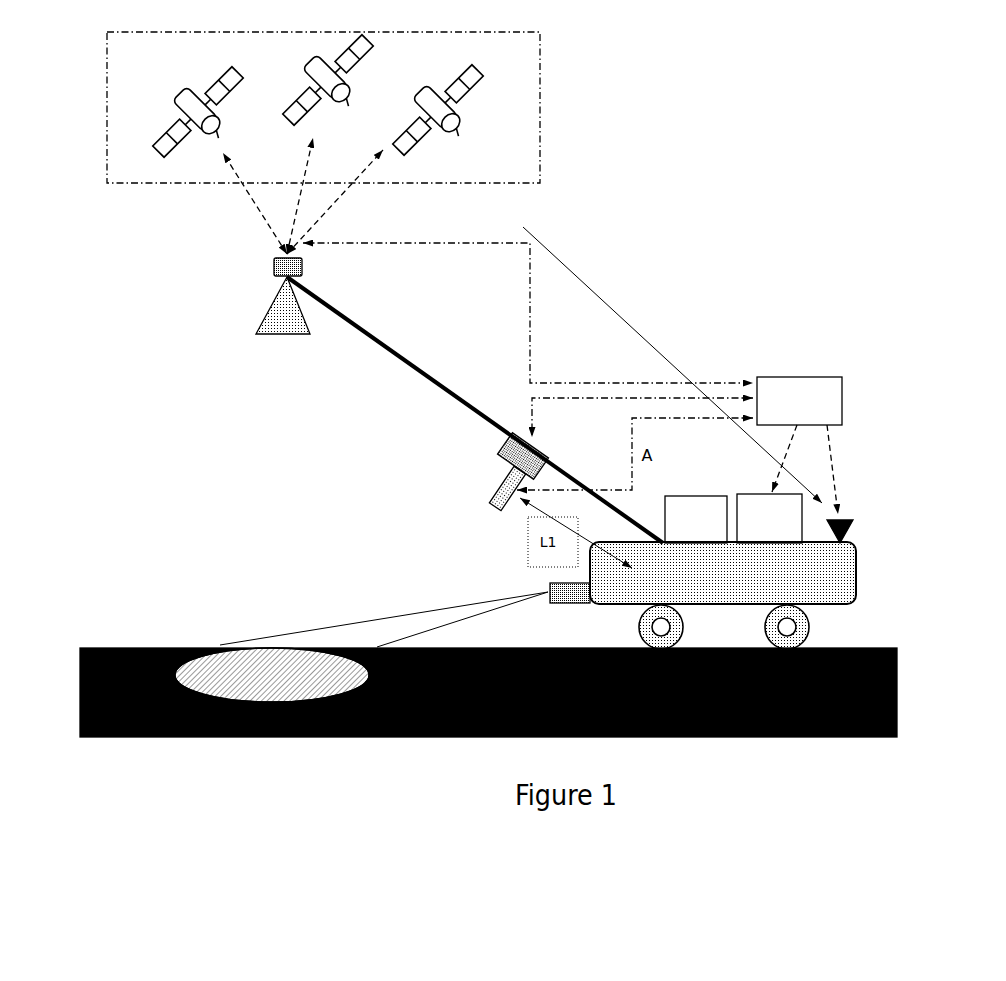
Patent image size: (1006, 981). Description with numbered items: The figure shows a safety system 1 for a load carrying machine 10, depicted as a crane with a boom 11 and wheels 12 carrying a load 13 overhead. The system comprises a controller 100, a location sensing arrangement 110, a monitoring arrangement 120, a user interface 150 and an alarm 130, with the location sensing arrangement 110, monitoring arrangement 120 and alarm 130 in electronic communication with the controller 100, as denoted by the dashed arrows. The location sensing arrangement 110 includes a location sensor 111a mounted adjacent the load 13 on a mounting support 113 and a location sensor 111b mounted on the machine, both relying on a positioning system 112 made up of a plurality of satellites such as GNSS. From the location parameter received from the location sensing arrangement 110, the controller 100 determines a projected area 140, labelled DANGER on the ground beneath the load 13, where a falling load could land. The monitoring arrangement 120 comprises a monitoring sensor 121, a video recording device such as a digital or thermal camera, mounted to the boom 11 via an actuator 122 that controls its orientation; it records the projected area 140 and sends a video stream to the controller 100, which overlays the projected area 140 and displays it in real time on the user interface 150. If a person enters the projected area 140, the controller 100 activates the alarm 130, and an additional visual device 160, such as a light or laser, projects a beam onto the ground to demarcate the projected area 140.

The safety system 1 is at (840, 225).
The load carrying machine 10 is at (857, 548).
The boom 11 is at (398, 372).
The wheels 12 is at (810, 628).
The load 13 is at (268, 303).
The controller 100 is at (799, 445).
The location sensing arrangement 110 is at (362, 230).
The location sensor 111a is at (298, 246).
The location sensor 111b is at (855, 525).
The positioning system 112 is at (541, 105).
The mounting support 113 is at (273, 268).
The monitoring arrangement 120 is at (448, 500).
The monitoring sensor 121 is at (493, 508).
The actuator 122 is at (500, 442).
The alarm 130 is at (769, 518).
The projected area 140 is at (213, 648).
The user interface 150 is at (696, 519).
The visual device 160 is at (548, 590).